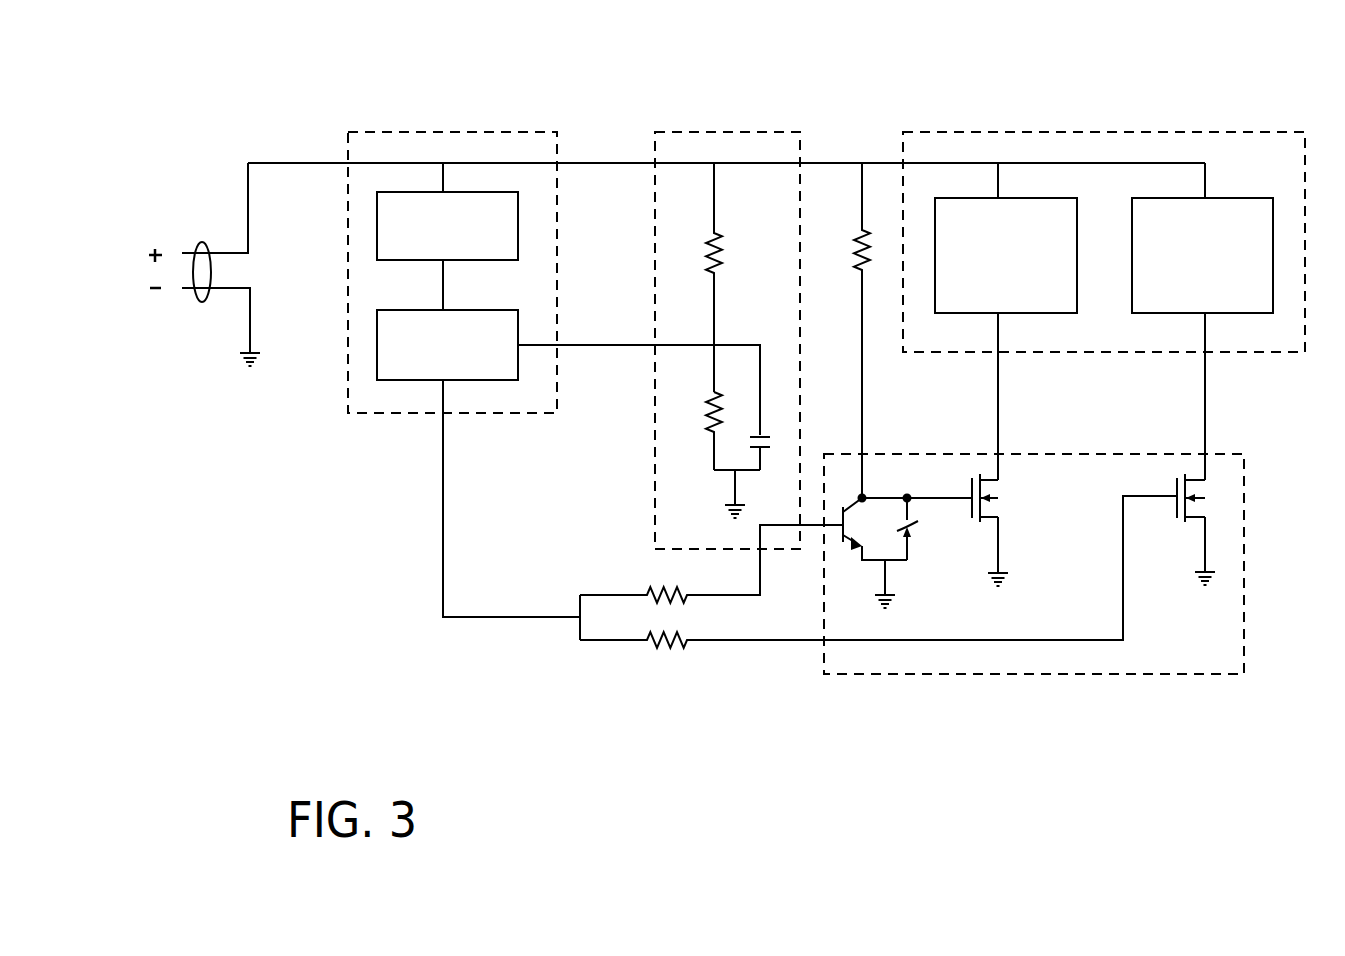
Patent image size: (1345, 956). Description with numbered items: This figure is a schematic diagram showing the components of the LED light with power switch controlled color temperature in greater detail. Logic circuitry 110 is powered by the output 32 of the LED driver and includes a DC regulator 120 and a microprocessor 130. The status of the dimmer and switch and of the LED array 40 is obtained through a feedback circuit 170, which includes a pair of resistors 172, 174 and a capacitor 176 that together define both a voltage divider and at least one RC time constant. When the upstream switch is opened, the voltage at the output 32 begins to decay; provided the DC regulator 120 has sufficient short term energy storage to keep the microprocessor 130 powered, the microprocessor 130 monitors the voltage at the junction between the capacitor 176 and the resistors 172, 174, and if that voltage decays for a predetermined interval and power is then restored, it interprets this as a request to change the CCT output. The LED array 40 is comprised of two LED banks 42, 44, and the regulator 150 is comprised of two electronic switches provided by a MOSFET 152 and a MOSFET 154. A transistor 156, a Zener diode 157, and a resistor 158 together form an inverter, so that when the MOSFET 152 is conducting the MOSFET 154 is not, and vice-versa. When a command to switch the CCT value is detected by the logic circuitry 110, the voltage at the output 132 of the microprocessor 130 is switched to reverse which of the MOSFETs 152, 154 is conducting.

The output of LED driver 32 is at (198, 243).
The logic circuitry 110 is at (388, 123).
The DC regulator 120 is at (498, 198).
The microprocessor 130 is at (390, 362).
The output of microprocessor 132 is at (443, 523).
The feedback circuit 170 is at (708, 124).
The resistor 172 is at (707, 258).
The resistor 174 is at (708, 418).
The capacitor 176 is at (763, 436).
The resistor 158 is at (857, 235).
The LED array 40 is at (1038, 124).
The LED bank 42 is at (943, 198).
The LED bank 44 is at (1168, 198).
The regulator 150 is at (879, 683).
The MOSFET 152 is at (1002, 510).
The MOSFET 154 is at (1207, 482).
The transistor 156 is at (855, 537).
The Zener diode 157 is at (912, 540).